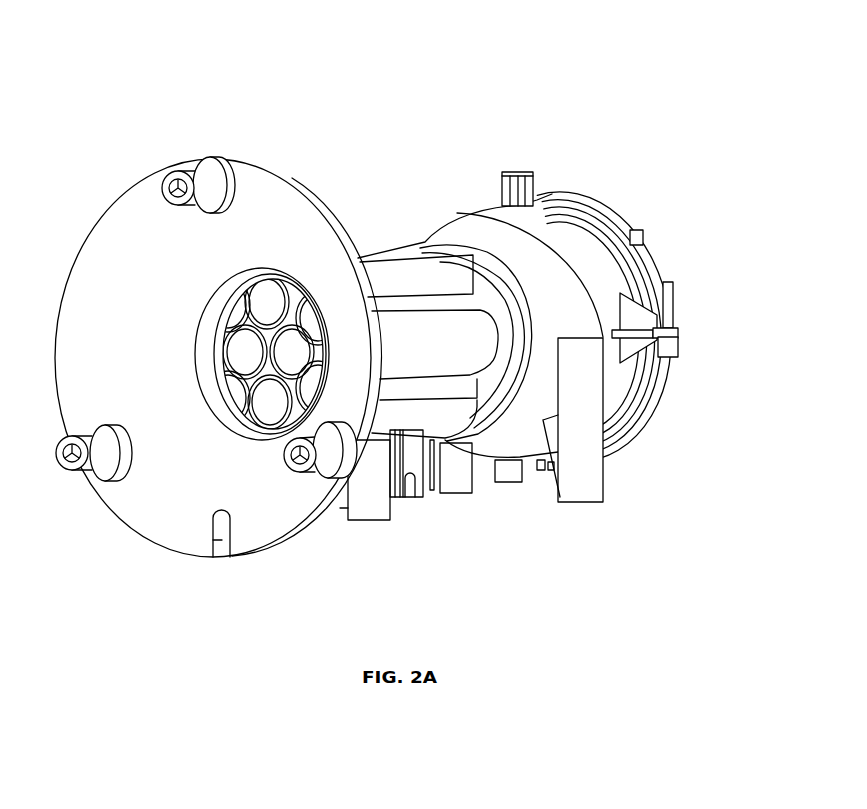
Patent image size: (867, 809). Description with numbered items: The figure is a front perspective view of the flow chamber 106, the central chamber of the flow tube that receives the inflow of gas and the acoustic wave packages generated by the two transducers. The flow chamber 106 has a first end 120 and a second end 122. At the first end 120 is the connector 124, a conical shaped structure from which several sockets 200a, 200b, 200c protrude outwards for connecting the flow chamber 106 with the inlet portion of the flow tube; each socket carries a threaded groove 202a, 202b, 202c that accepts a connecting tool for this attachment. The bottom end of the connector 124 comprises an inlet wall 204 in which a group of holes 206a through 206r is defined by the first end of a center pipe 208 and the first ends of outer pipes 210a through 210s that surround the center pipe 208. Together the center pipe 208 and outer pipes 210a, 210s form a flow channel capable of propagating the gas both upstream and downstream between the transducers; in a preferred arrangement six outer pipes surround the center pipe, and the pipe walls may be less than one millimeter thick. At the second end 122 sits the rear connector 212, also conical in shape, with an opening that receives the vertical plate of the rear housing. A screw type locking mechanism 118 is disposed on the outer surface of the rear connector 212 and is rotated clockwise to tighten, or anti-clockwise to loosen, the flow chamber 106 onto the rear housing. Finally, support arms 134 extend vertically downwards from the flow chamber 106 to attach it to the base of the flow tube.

The flow chamber 106 is at (159, 45).
The connector 124 is at (283, 184).
The inlet wall 204 is at (238, 317).
The center pipe 208 is at (270, 358).
The hole 206a is at (291, 346).
The hole 206r is at (270, 417).
The socket 200a is at (218, 189).
The socket 200b is at (287, 455).
The socket 200c is at (100, 428).
The threaded groove 202a is at (172, 197).
The threaded groove 202b is at (298, 463).
The threaded groove 202c is at (72, 461).
The first end 120 is at (358, 245).
The outer pipe 210a is at (427, 286).
The outer pipe 210s is at (433, 422).
The second end 122 is at (490, 198).
The rear connector 212 is at (567, 227).
The support arms 134 is at (572, 490).
The locking mechanism 118 is at (678, 342).